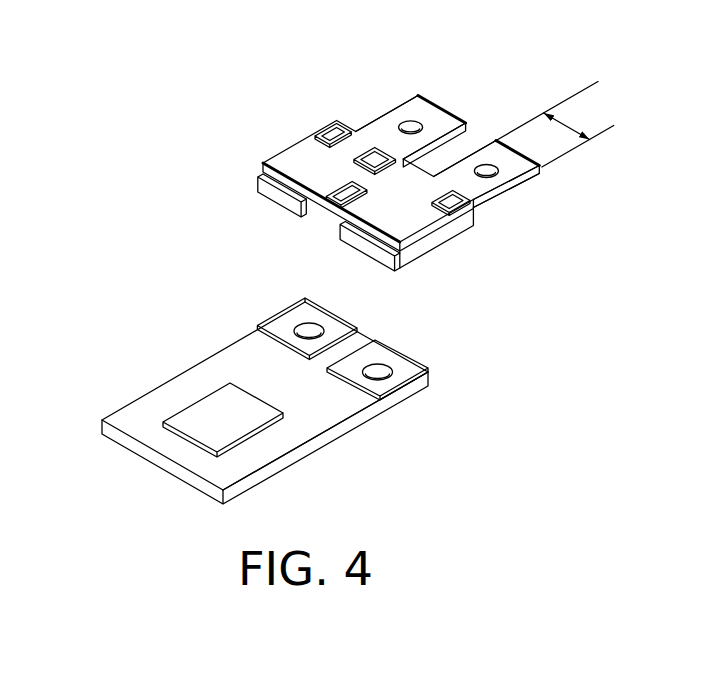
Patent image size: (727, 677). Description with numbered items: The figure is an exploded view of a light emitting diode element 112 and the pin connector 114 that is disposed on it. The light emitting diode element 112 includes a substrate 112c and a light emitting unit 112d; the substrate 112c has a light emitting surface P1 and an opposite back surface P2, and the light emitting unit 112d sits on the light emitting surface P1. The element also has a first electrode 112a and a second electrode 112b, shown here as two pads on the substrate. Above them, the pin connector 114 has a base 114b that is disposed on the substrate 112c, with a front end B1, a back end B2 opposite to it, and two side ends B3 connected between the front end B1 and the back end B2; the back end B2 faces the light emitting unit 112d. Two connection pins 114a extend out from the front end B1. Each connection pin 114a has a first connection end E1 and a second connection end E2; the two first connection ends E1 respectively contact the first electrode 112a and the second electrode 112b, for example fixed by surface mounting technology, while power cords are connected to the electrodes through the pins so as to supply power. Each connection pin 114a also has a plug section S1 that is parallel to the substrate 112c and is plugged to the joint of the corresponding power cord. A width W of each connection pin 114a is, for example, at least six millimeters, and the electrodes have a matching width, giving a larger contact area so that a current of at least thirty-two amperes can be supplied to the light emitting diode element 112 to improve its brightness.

The light emitting diode element 112 is at (271, 393).
The first electrode 112a is at (280, 328).
The second electrode 112b is at (414, 378).
The substrate 112c is at (287, 440).
The light emitting unit 112d is at (211, 427).
The pin connector 114 is at (407, 183).
The connection pin 114a is at (396, 110).
The base 114b is at (410, 200).
The front end B1 is at (389, 173).
The back end B2 is at (337, 188).
The side end B3 is at (322, 126).
The first connection end E1 is at (354, 248).
The second connection end E2 is at (510, 147).
The light emitting surface P1 is at (143, 408).
The back surface P2 is at (126, 466).
The plug section S1 is at (506, 200).
The width W is at (564, 121).